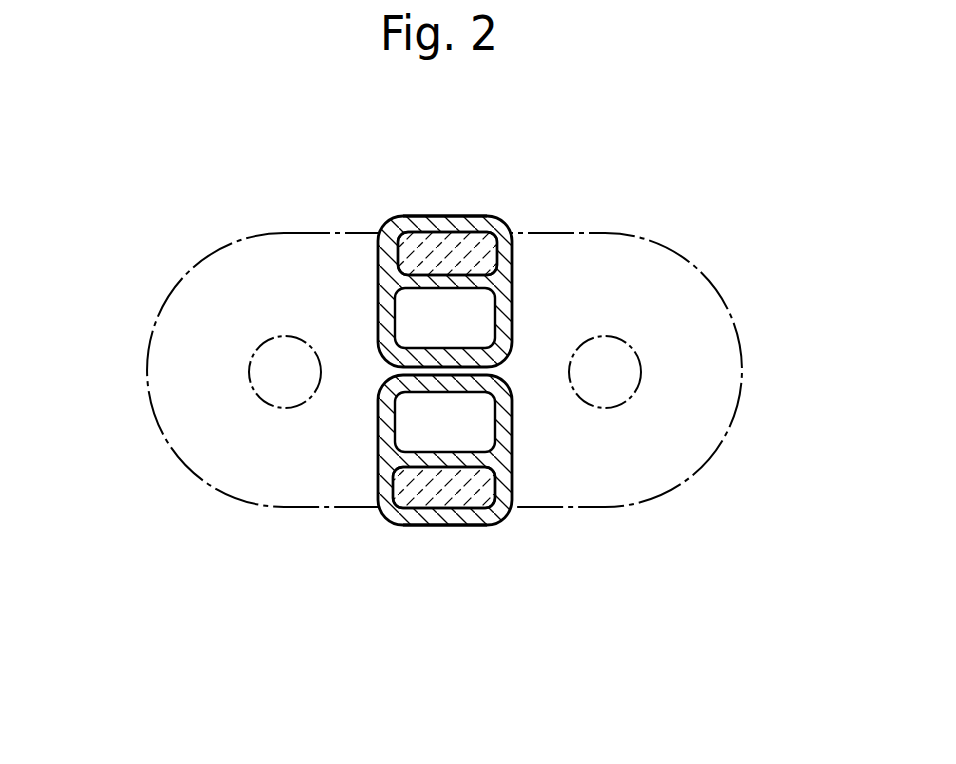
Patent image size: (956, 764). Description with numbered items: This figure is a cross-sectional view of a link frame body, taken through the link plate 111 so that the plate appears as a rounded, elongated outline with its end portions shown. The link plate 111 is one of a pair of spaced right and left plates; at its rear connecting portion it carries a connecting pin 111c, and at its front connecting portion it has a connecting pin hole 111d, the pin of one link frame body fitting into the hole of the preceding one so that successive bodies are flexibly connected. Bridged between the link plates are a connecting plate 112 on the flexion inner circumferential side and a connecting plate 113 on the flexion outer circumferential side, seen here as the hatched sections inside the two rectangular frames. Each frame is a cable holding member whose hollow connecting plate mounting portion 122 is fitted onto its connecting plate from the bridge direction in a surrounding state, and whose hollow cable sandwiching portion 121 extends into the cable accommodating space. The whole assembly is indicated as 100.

The connection member 100 is at (707, 220).
The link plate 111 is at (227, 247).
The connecting pin 111c is at (642, 380).
The connecting pin hole 111d is at (248, 367).
The connecting plate 112 is at (478, 492).
The connecting plate 113 is at (490, 250).
The cable sandwiching portion 121 is at (378, 317).
The connecting plate mounting portion 122 is at (458, 217).